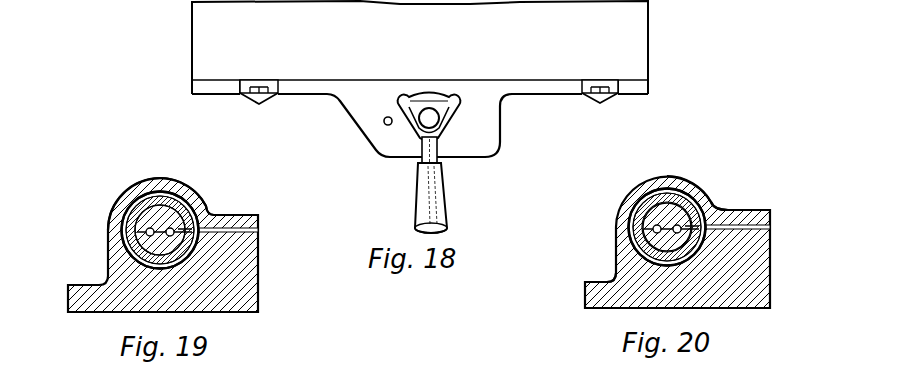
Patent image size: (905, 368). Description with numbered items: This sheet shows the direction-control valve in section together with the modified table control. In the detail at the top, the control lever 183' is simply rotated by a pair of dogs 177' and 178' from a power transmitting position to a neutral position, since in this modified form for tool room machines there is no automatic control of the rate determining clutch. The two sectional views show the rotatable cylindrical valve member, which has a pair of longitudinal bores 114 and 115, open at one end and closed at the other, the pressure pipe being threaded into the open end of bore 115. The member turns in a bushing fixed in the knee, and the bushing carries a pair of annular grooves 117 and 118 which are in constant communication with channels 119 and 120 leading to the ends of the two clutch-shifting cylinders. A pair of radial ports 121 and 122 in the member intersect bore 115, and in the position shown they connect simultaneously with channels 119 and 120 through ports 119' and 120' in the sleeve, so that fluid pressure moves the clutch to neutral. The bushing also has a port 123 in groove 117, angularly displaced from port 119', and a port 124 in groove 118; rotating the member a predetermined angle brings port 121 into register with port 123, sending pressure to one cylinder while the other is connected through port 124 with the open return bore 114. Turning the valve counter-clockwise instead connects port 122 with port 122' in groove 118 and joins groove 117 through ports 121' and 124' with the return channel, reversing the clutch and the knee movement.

In FIG. 18, the dog 177' is at (277, 103).
In FIG. 18, the dog 178' is at (619, 103).
In FIG. 18, the control lever 183' is at (453, 185).
In FIG. 19, the longitudinal bore 114 is at (118, 263).
In FIG. 20, the longitudinal bore 114 is at (629, 252).
In FIG. 19, the longitudinal bore 115 is at (176, 218).
In FIG. 20, the longitudinal bore 115 is at (634, 262).
In FIG. 19, the annular groove 117 is at (124, 220).
In FIG. 20, the annular groove 118 is at (638, 212).
In FIG. 19, the channel 119 is at (244, 241).
In FIG. 19, the port 119' is at (211, 196).
In FIG. 20, the channel 120 is at (742, 209).
In FIG. 20, the port 120' is at (720, 187).
In FIG. 19, the radial port 121 is at (181, 221).
In FIG. 19, the port 121' is at (127, 230).
In FIG. 20, the radial port 122 is at (667, 210).
In FIG. 20, the port 122' is at (696, 202).
In FIG. 19, the port 123 is at (185, 260).
In FIG. 20, the port 124 is at (629, 227).
In FIG. 19, the port 124' is at (105, 235).